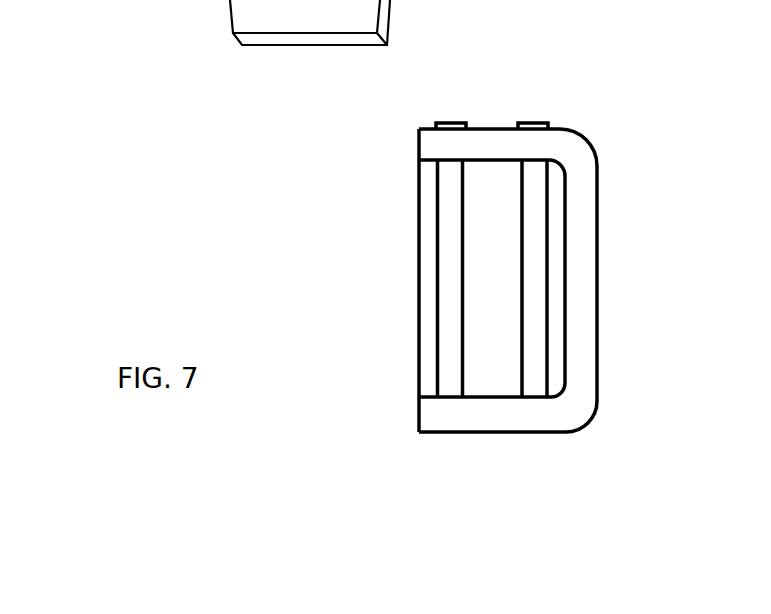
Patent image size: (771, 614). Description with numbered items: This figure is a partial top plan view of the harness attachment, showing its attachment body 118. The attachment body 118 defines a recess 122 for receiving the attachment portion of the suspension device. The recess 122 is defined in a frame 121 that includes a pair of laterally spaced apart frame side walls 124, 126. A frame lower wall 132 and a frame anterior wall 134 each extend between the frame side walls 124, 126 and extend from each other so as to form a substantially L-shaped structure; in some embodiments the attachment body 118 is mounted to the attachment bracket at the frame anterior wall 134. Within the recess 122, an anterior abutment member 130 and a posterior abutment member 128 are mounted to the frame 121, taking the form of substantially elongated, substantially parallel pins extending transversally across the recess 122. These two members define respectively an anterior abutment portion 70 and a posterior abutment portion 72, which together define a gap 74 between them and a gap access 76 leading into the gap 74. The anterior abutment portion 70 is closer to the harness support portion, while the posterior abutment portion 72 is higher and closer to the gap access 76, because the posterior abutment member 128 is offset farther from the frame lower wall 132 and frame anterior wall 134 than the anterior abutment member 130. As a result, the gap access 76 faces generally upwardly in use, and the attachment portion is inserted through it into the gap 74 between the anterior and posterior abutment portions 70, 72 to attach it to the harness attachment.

The attachment body 118 is at (165, 235).
The anterior abutment portion 70 is at (523, 357).
The posterior abutment portion 72 is at (465, 270).
The gap 74 is at (492, 88).
The gap access 76 is at (511, 163).
The frame 121 is at (603, 125).
The recess 122 is at (480, 388).
The frame side wall 124 is at (452, 147).
The frame side wall 126 is at (530, 422).
The posterior abutment member 128 is at (450, 325).
The anterior abutment member 130 is at (533, 285).
The frame lower wall 132 is at (420, 200).
The frame anterior wall 134 is at (580, 323).